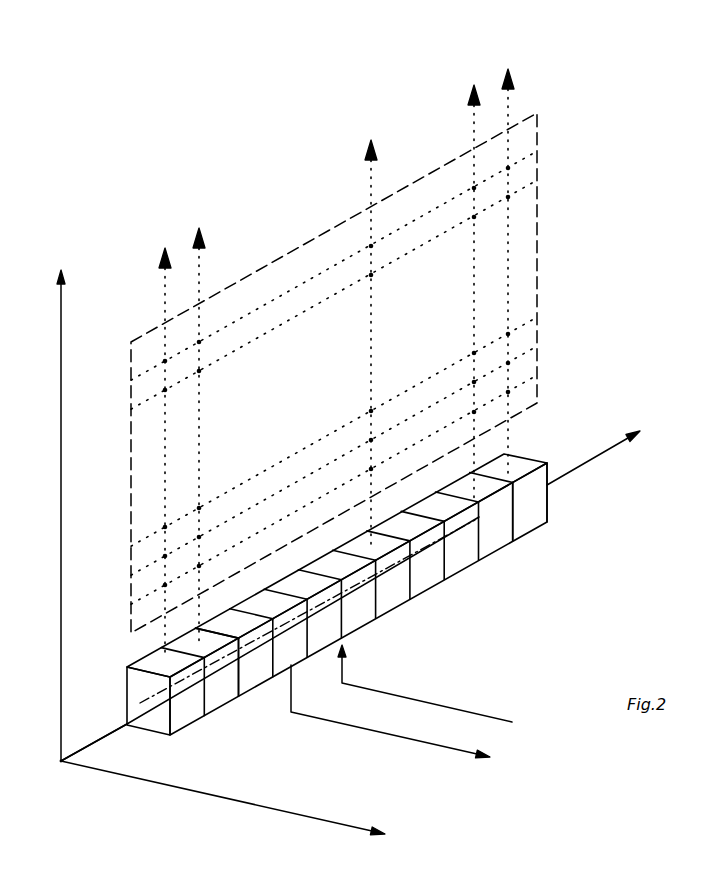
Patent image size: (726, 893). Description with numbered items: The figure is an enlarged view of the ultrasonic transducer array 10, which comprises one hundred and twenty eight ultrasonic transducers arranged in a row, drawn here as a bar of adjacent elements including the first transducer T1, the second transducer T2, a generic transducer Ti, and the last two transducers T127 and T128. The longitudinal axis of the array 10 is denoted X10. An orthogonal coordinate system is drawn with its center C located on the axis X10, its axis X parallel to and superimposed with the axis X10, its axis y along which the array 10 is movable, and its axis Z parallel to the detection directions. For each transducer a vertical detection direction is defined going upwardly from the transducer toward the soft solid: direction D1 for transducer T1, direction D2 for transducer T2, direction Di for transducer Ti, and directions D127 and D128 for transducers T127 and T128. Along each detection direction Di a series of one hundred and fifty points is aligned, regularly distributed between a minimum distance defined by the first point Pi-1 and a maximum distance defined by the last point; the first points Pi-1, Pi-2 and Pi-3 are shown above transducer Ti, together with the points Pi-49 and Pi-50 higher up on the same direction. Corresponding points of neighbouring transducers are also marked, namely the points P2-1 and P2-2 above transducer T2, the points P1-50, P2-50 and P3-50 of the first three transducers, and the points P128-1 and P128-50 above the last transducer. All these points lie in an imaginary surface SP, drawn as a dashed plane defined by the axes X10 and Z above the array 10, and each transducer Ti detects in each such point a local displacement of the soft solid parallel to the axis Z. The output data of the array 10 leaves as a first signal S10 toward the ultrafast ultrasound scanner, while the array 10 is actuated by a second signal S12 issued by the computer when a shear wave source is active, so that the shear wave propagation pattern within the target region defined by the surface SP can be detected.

The array 10 is at (382, 586).
The center C is at (51, 770).
The axis X is at (354, 587).
The axis Y y is at (229, 799).
The axis Z is at (66, 510).
The longitudinal axis X10 is at (94, 732).
The imaginary surface SP is at (537, 259).
The detection direction D1 is at (164, 442).
The detection direction D2 is at (200, 427).
The detection direction Di is at (369, 334).
The detection direction D127 is at (456, 287).
The detection direction D128 is at (510, 260).
The point P1-50 is at (162, 359).
The point P2-50 is at (201, 342).
The point P3-50 is at (201, 372).
The point Pi-50 is at (395, 232).
The point Pi-49 is at (393, 284).
The point P128-50 is at (510, 168).
The point P128-1 is at (510, 392).
The point Pi-3 is at (388, 400).
The point Pi-2 is at (115, 555).
The point Pi-1 is at (115, 598).
The point P2-2 is at (220, 528).
The point P2-1 is at (220, 563).
The ultrasonic transducer T1 is at (188, 705).
The ultrasonic transducer T2 is at (220, 692).
The ultrasonic transducer Ti is at (385, 598).
The ultrasonic transducer T127 is at (490, 537).
The ultrasonic transducer T128 is at (537, 502).
The second signal S12 is at (326, 621).
The first signal S10 is at (390, 723).